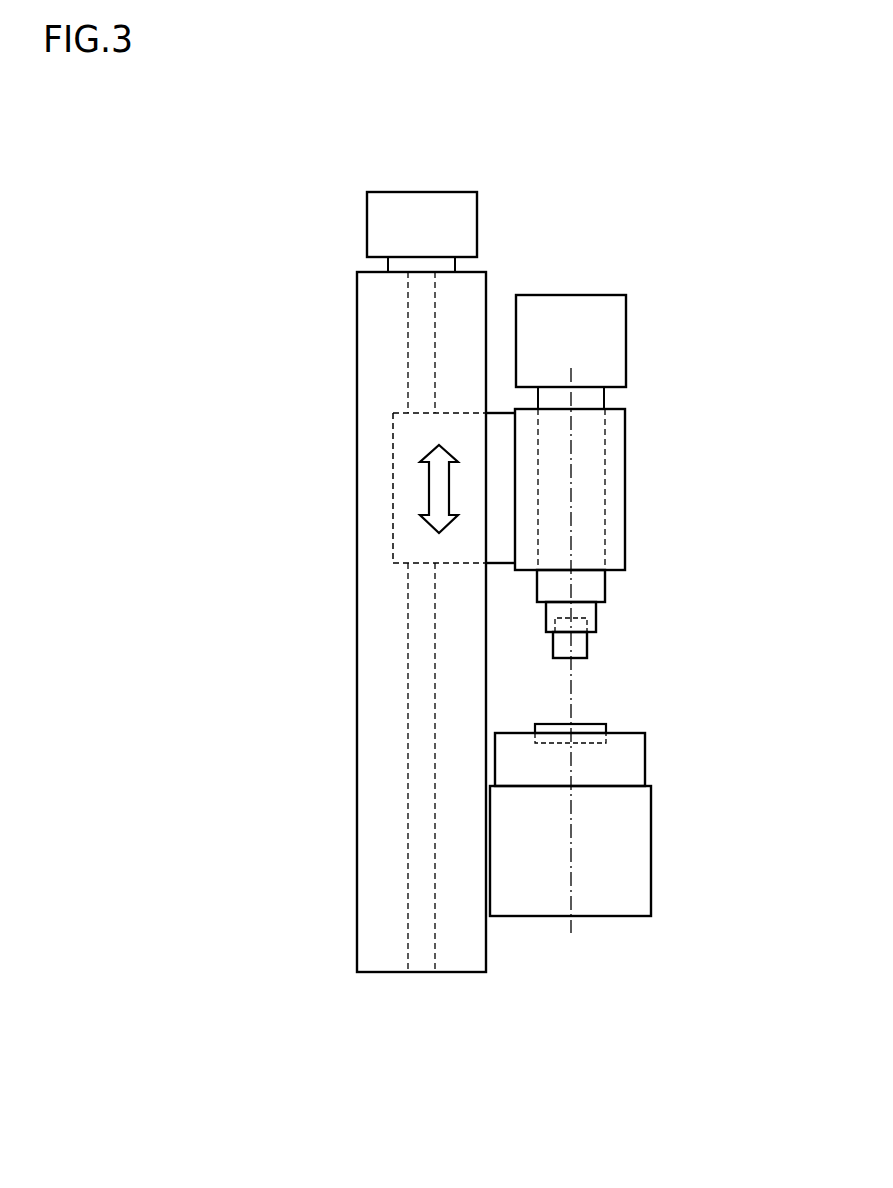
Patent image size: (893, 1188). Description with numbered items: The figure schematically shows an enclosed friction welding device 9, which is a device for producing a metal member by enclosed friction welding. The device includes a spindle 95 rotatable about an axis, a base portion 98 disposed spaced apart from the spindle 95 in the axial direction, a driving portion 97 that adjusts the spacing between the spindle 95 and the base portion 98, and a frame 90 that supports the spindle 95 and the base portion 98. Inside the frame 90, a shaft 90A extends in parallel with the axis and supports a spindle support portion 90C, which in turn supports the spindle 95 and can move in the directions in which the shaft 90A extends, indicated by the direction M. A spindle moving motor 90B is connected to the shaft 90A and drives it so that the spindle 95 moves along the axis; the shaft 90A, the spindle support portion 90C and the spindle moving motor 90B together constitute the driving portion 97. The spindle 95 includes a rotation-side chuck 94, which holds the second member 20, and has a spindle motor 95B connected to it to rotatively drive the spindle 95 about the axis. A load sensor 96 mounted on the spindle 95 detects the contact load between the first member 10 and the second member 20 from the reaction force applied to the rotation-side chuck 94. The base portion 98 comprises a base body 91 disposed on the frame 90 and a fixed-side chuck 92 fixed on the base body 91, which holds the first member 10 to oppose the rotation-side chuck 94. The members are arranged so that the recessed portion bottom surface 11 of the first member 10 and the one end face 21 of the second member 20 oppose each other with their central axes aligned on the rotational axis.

The enclosed friction welding device 9 is at (674, 184).
The frame 90 is at (472, 960).
The shaft 90A is at (413, 348).
The spindle moving motor 90B is at (378, 219).
The spindle support portion 90C is at (413, 438).
The driving portion 97 is at (284, 208).
The movement direction M is at (425, 488).
The spindle motor 95B is at (617, 340).
The spindle 95 is at (596, 398).
The load sensor 96 is at (597, 585).
The rotation-side chuck 94 is at (596, 614).
The second member 20 is at (585, 646).
The one end face 21 is at (578, 658).
The recessed portion bottom surface 11 is at (577, 733).
The first member 10 is at (604, 726).
The fixed-side chuck 92 is at (606, 760).
The base body 91 is at (640, 862).
The base portion 98 is at (705, 880).